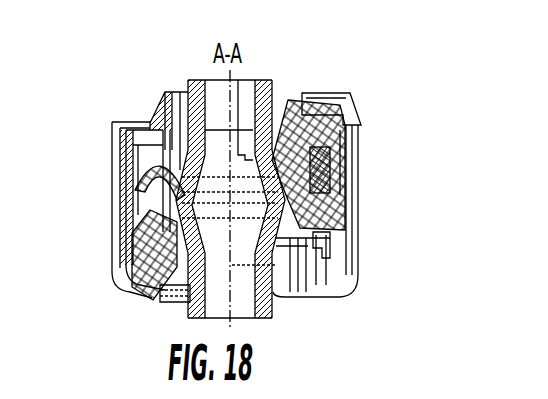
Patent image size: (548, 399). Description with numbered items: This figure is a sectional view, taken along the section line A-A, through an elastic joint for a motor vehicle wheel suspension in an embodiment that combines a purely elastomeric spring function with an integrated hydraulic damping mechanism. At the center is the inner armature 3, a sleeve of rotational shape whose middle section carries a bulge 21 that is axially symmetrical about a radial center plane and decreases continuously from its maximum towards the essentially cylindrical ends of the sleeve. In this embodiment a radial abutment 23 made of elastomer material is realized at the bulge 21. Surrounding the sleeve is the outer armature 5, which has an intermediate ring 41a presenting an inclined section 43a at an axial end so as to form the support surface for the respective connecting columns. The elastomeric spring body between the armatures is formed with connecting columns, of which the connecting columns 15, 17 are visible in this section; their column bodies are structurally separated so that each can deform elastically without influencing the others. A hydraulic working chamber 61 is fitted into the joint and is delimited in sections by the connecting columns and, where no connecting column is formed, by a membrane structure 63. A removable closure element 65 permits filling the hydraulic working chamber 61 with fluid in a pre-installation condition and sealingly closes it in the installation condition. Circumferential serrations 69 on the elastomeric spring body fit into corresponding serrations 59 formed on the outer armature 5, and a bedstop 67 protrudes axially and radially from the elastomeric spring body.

The inner armature 3 is at (270, 320).
The outer armature 5 is at (110, 213).
The connecting column 15 is at (140, 287).
The connecting column 17 is at (302, 92).
The bulge 21 is at (236, 100).
The radial abutment 23 is at (354, 180).
The intermediate ring 41a is at (112, 147).
The inclined section 43a is at (363, 133).
The serrations 59 is at (110, 273).
The hydraulic working chamber 61 is at (351, 163).
The membrane structure 63 is at (351, 263).
The removable closure element 65 is at (352, 202).
The bedstop 67 is at (153, 95).
The circumferential serrations 69 is at (110, 245).